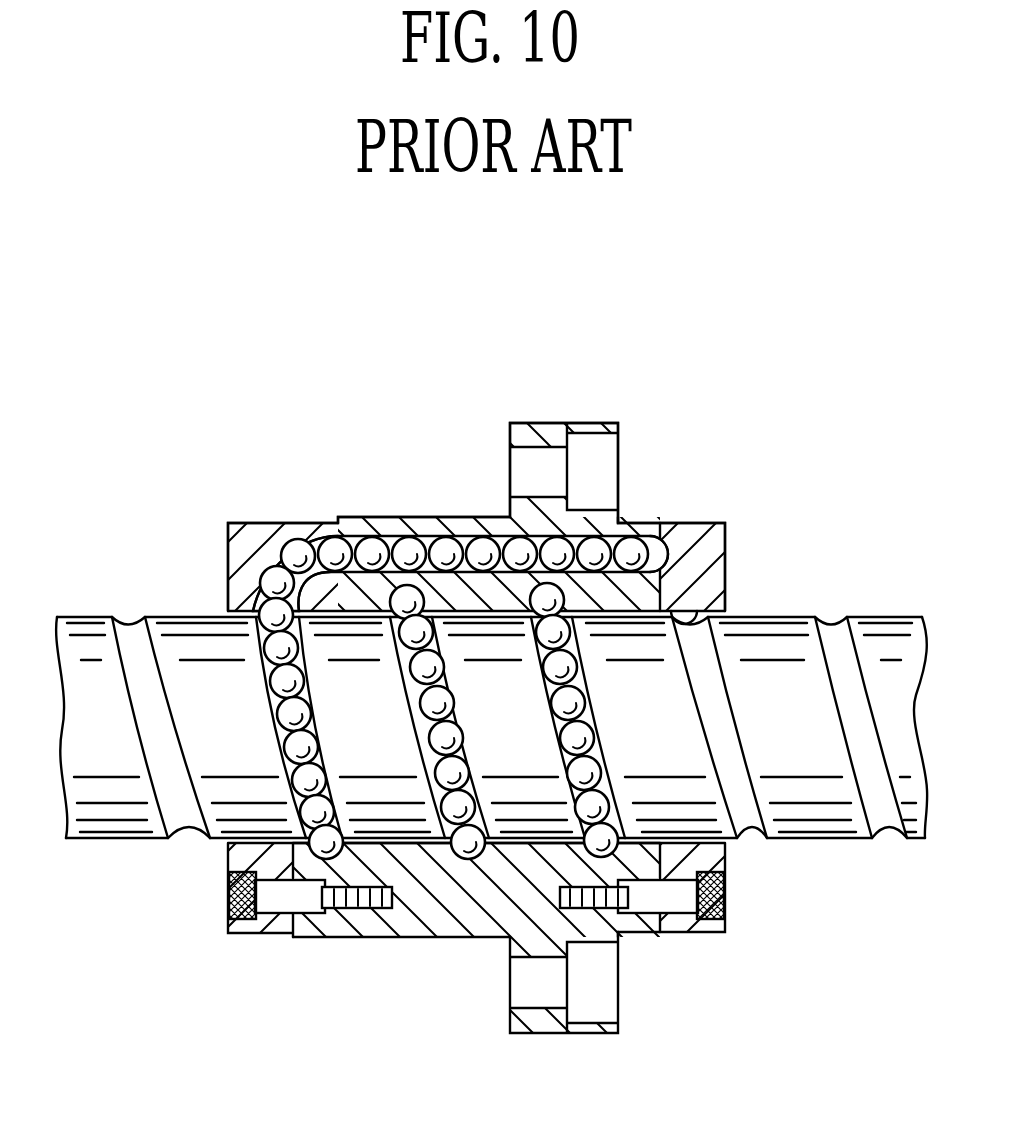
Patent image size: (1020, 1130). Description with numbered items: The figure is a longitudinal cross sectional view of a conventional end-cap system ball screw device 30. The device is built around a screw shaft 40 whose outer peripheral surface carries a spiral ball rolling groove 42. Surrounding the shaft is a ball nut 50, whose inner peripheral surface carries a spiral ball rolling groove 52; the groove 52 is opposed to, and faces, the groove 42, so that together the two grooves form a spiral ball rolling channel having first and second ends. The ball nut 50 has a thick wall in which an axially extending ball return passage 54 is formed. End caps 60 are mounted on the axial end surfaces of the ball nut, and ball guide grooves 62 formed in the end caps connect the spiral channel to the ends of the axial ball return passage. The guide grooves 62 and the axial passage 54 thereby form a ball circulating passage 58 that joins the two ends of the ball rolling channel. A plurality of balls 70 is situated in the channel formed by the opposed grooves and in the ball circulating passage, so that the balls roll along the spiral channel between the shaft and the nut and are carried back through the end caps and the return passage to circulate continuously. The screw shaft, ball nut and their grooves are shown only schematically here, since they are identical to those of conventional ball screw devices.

The ball screw device 30 is at (632, 327).
The screw shaft 40 is at (853, 820).
The spiral ball rolling groove 42 is at (740, 797).
The ball nut 50 is at (548, 428).
The spiral ball rolling groove 52 is at (482, 855).
The ball return passage 54 is at (388, 530).
The ball circulating passage 58 is at (367, 352).
The end caps 60 is at (240, 548).
The ball guide grooves 62 is at (300, 540).
The balls 70 is at (475, 543).